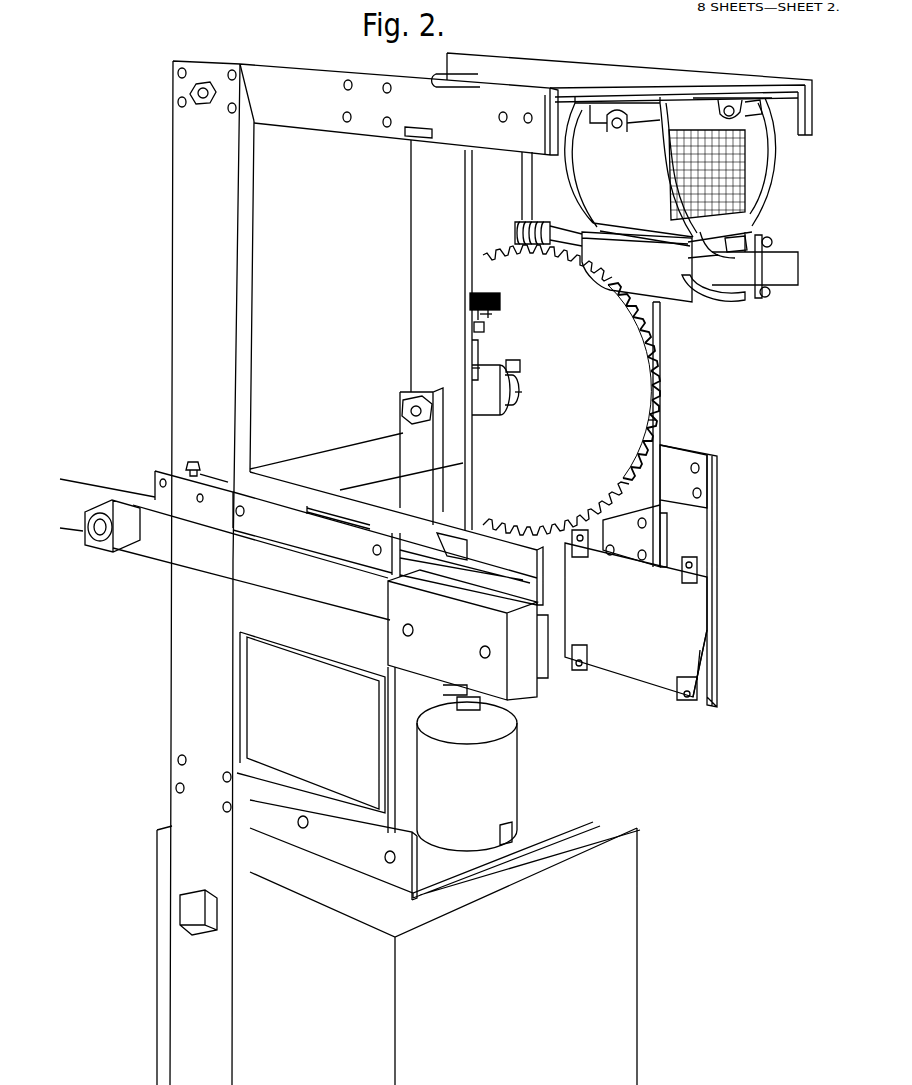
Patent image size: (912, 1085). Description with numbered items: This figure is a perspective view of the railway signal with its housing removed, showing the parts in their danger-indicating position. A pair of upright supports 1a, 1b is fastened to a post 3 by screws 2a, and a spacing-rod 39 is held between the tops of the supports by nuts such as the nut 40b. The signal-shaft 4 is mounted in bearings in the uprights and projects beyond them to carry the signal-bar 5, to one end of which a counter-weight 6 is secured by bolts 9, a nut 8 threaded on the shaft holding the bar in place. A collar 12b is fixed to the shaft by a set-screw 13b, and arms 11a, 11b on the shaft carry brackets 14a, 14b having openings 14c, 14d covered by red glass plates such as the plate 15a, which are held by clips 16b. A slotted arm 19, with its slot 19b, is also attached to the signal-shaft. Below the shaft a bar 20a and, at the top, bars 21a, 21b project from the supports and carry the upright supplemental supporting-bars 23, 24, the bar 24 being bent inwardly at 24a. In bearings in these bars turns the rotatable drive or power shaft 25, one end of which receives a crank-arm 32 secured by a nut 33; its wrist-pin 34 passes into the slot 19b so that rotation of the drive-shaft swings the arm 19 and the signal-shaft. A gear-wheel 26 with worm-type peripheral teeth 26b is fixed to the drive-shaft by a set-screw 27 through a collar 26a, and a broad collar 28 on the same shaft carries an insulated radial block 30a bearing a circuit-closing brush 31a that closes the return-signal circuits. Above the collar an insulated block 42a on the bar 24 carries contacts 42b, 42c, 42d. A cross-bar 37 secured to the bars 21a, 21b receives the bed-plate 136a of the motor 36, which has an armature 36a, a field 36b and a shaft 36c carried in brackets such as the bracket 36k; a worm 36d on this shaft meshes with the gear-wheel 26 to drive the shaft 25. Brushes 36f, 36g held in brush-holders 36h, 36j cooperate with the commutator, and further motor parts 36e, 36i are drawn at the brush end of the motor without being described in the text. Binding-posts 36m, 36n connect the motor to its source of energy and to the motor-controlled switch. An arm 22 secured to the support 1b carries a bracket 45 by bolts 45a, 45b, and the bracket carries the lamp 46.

The upright support 1a is at (514, 157).
The upright support 1b is at (172, 680).
The screw 2a is at (180, 915).
The post 3 is at (443, 956).
The signal-shaft 4 is at (312, 464).
The signal-bar 5 is at (160, 556).
The counter-weight 6 is at (468, 635).
The nut 8 is at (112, 548).
The bolt 9 is at (478, 650).
The arm 11a is at (700, 480).
The arm 11b is at (155, 482).
The collar 12b is at (218, 478).
The set-screw 13b is at (187, 466).
The bracket 14a is at (700, 548).
The bracket 14b is at (311, 718).
The opening 14c is at (698, 668).
The opening 14d is at (330, 662).
The glass plate 15a is at (685, 620).
The clip 16b is at (680, 680).
The arm or lever 19 is at (372, 510).
The slot 19b is at (515, 566).
The bar 20a is at (667, 530).
The bar 21a is at (598, 75).
The bar 21b is at (308, 78).
The arm 22 is at (333, 850).
The upright supplemental supporting-bar 23 is at (661, 306).
The upright supplemental supporting-bar 24 is at (423, 233).
The inward bend 24a is at (410, 138).
The rotatable drive or power shaft 25 is at (506, 380).
The gear-wheel 26 is at (640, 390).
The collar 26a is at (524, 410).
The peripheral teeth 26b is at (650, 420).
The set-screw 27 is at (512, 360).
The broad collar 28 is at (482, 415).
The insulated radial block 30a is at (472, 368).
The circuit-closing brush 31a is at (472, 344).
The crank-arm 32 is at (412, 430).
The nut 33 is at (400, 402).
The wrist-pin 34 is at (376, 530).
The motor 36 is at (670, 171).
The armature 36a is at (738, 228).
The field 36b is at (752, 165).
The motor shaft 36c is at (568, 232).
The worm 36d is at (515, 232).
The plate 36e is at (763, 252).
The brush 36f is at (772, 240).
The brush 36g is at (770, 290).
The brush-holder 36h is at (748, 240).
The block 36i is at (798, 268).
The brush-holder 36j is at (742, 302).
The bracket 36k is at (584, 254).
The binding-post 36m is at (616, 128).
The binding-post 36n is at (734, 113).
The cross-bar 37 is at (707, 86).
The spacing-rod 39 is at (432, 77).
The nut 40b is at (205, 104).
The insulated block 42a is at (478, 295).
The contact 42b is at (495, 304).
The contact 42c is at (500, 312).
The contact 42d is at (485, 326).
The bracket 45 is at (567, 815).
The bolt 45a is at (297, 822).
The bolt 45b is at (386, 852).
The lamp 46 is at (513, 756).
The attaching bar or bed-plate 136a is at (757, 98).